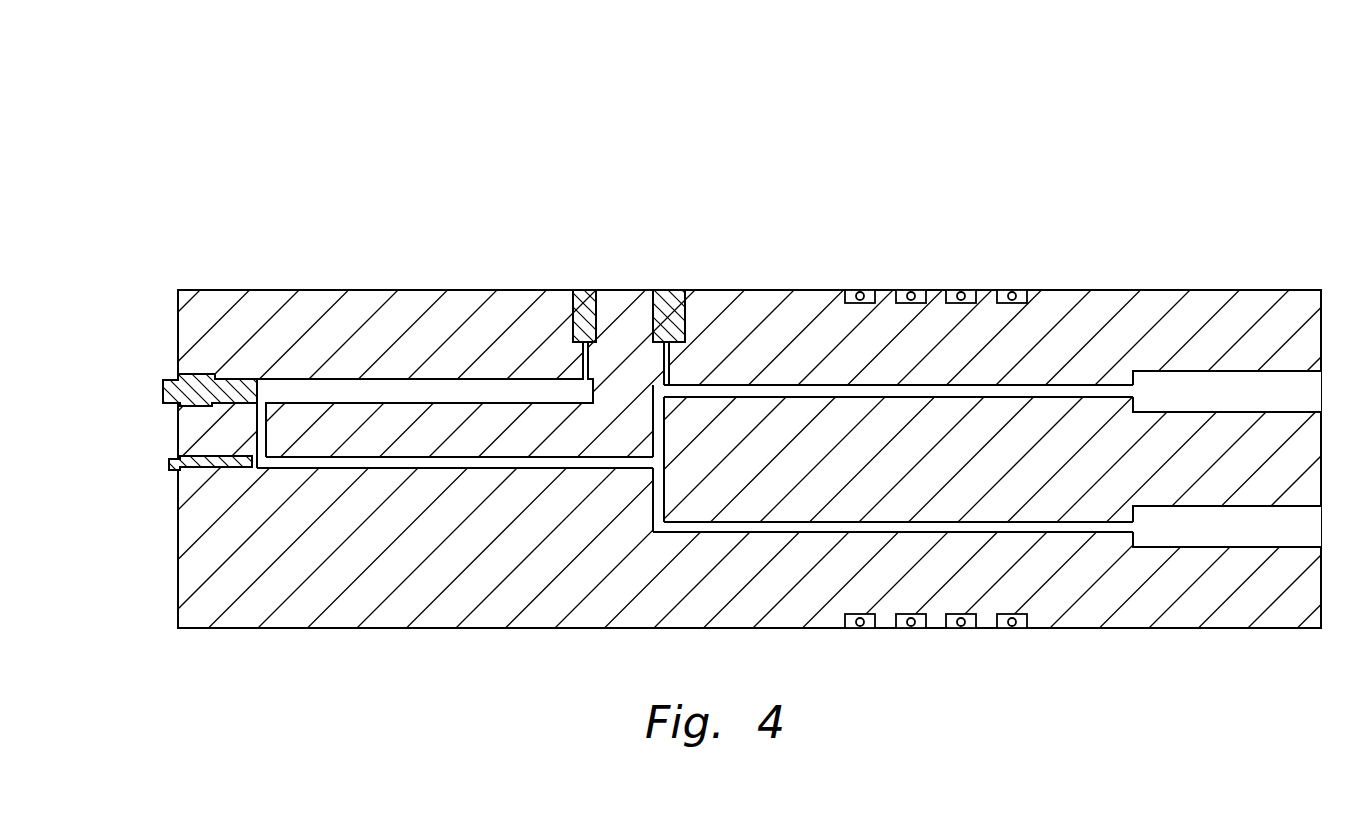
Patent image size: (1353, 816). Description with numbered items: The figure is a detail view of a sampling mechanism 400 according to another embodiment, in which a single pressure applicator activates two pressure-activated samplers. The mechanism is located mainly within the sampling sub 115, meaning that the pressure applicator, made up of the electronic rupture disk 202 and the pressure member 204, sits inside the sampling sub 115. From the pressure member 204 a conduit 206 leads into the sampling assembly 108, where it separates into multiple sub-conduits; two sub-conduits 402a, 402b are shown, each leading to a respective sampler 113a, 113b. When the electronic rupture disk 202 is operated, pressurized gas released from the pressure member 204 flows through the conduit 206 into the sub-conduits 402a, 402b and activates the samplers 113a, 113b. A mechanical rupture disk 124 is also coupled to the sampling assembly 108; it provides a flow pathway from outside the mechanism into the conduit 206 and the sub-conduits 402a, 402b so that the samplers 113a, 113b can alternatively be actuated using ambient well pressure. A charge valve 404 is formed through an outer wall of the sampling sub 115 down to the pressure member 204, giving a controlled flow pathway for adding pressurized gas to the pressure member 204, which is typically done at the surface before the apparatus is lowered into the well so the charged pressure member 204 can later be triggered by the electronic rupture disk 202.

The sampling mechanism 400 is at (676, 367).
The sampling assembly 108 is at (937, 249).
The sampling sub 115 is at (513, 290).
The mechanical rupture disk 124 is at (666, 300).
The electronic rupture disk 202 is at (163, 383).
The pressure member 204 is at (347, 388).
The conduit 206 is at (428, 470).
The charge valve 404 is at (583, 300).
The sub-conduit 402a is at (1064, 388).
The sub-conduit 402b is at (1065, 527).
The sampler 113a is at (1197, 395).
The sampler 113b is at (1197, 530).